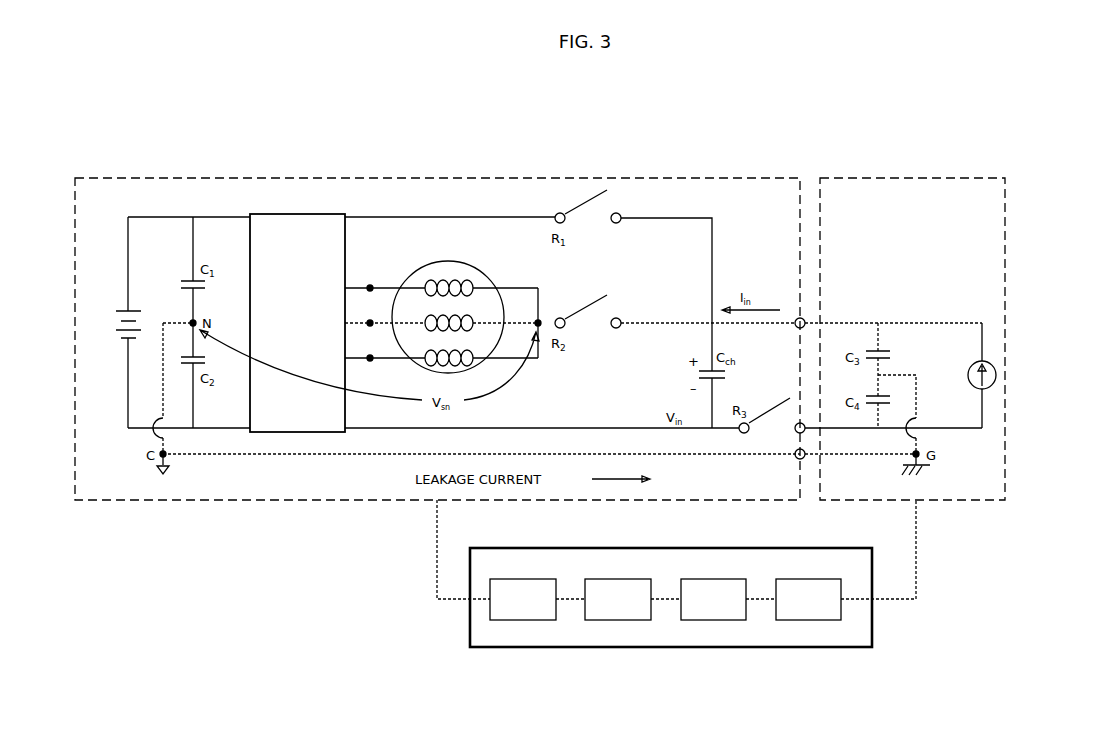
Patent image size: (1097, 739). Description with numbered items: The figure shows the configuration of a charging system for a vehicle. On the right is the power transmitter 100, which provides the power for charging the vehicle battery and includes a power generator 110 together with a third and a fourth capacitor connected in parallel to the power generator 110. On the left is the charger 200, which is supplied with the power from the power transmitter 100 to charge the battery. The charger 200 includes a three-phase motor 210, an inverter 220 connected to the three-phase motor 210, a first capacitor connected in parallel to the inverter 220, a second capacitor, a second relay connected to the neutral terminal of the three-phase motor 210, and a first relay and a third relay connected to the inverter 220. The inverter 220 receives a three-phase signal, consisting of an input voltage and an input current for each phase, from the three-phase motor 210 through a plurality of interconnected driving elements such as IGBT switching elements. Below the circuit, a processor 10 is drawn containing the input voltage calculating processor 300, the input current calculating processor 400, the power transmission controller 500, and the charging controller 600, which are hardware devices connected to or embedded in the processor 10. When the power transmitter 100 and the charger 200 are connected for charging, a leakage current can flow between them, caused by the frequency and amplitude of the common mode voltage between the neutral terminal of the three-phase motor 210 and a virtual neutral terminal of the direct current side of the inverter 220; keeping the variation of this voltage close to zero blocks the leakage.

The processor 10 is at (671, 631).
The power transmitter 100 is at (915, 178).
The power generator 110 is at (996, 375).
The charger 200 is at (583, 178).
The three-phase motor 210 is at (478, 262).
The inverter 220 is at (298, 214).
The input voltage calculating processor 300 is at (618, 599).
The input current calculating processor 400 is at (713, 599).
The power transmission controller 500 is at (808, 599).
The charging controller 600 is at (523, 599).